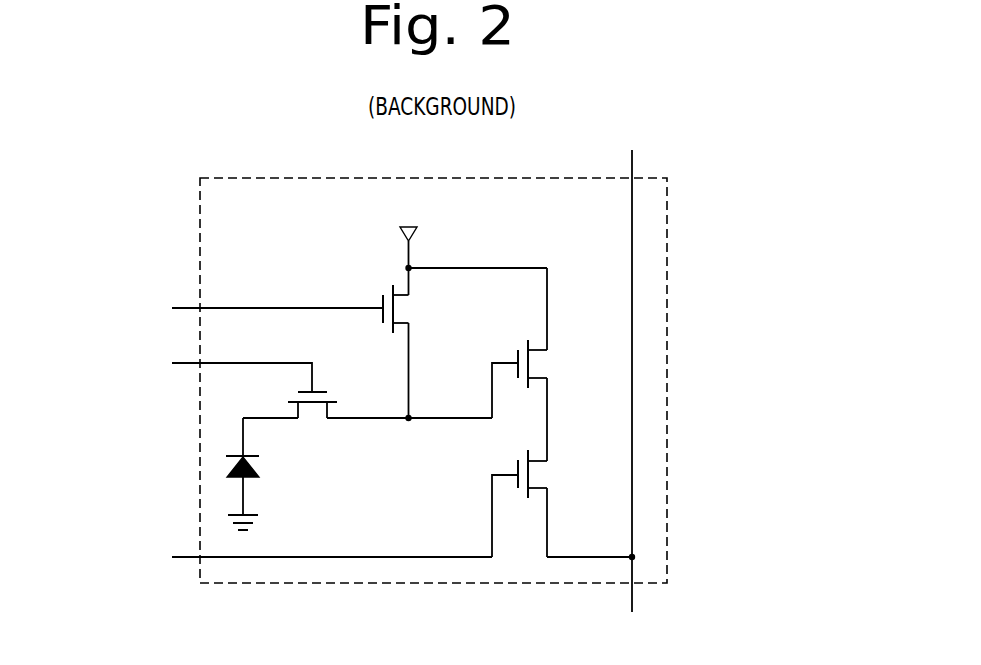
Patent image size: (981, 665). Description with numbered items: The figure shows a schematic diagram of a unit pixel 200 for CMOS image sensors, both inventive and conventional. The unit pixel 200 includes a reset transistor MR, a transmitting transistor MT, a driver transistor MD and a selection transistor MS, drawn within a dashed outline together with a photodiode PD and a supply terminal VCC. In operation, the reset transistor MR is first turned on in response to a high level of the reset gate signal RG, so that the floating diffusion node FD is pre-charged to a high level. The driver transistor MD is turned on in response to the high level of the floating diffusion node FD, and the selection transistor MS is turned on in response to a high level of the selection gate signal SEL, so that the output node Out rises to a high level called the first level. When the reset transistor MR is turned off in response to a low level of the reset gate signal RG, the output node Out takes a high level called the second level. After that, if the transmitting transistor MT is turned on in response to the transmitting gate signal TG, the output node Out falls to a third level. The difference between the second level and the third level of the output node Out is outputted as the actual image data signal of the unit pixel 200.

The unit pixel 200 is at (100, 152).
The supply voltage terminal VCC is at (407, 249).
The reset transistor MR is at (410, 309).
The reset gate signal RG is at (260, 310).
The transmitting gate signal TG is at (224, 365).
The transmitting transistor MT is at (312, 420).
The floating diffusion node FD is at (410, 432).
The photodiode PD is at (258, 474).
The driver transistor MD is at (546, 364).
The selection transistor MS is at (546, 474).
The selection gate signal SEL is at (377, 558).
The output node Out is at (632, 395).